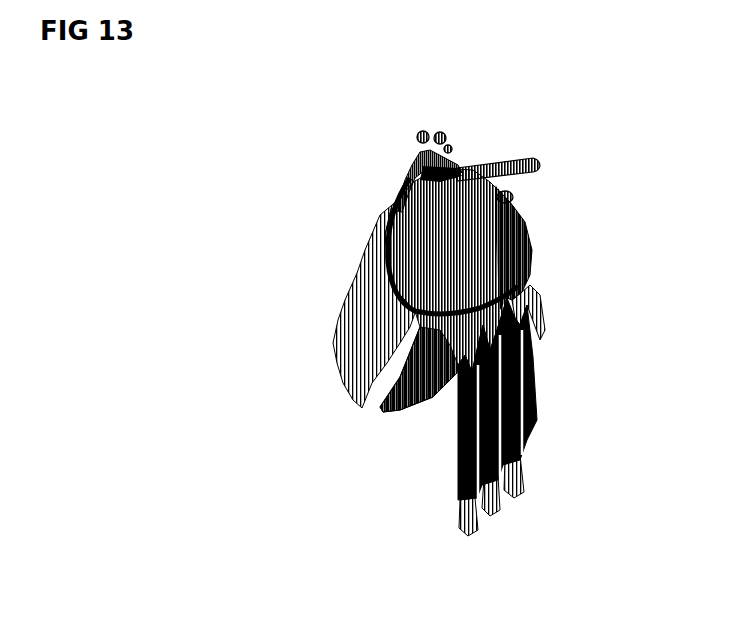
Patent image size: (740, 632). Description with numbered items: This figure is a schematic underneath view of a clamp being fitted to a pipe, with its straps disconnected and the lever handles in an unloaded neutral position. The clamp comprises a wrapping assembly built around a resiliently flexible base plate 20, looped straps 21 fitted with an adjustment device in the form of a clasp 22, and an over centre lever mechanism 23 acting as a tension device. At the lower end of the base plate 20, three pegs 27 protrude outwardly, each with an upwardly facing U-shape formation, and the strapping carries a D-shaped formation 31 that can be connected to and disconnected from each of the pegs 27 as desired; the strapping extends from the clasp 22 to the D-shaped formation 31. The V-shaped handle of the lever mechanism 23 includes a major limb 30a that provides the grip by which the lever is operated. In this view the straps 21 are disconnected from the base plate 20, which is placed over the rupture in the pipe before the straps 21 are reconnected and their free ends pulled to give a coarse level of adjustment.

The base plate 20 is at (347, 390).
The straps 21 is at (460, 423).
The clasp 22 is at (522, 293).
The over centre lever mechanism 23 is at (478, 143).
The pegs 27 is at (338, 355).
The major limb 30a is at (525, 158).
The D-shaped formation 31 is at (518, 500).